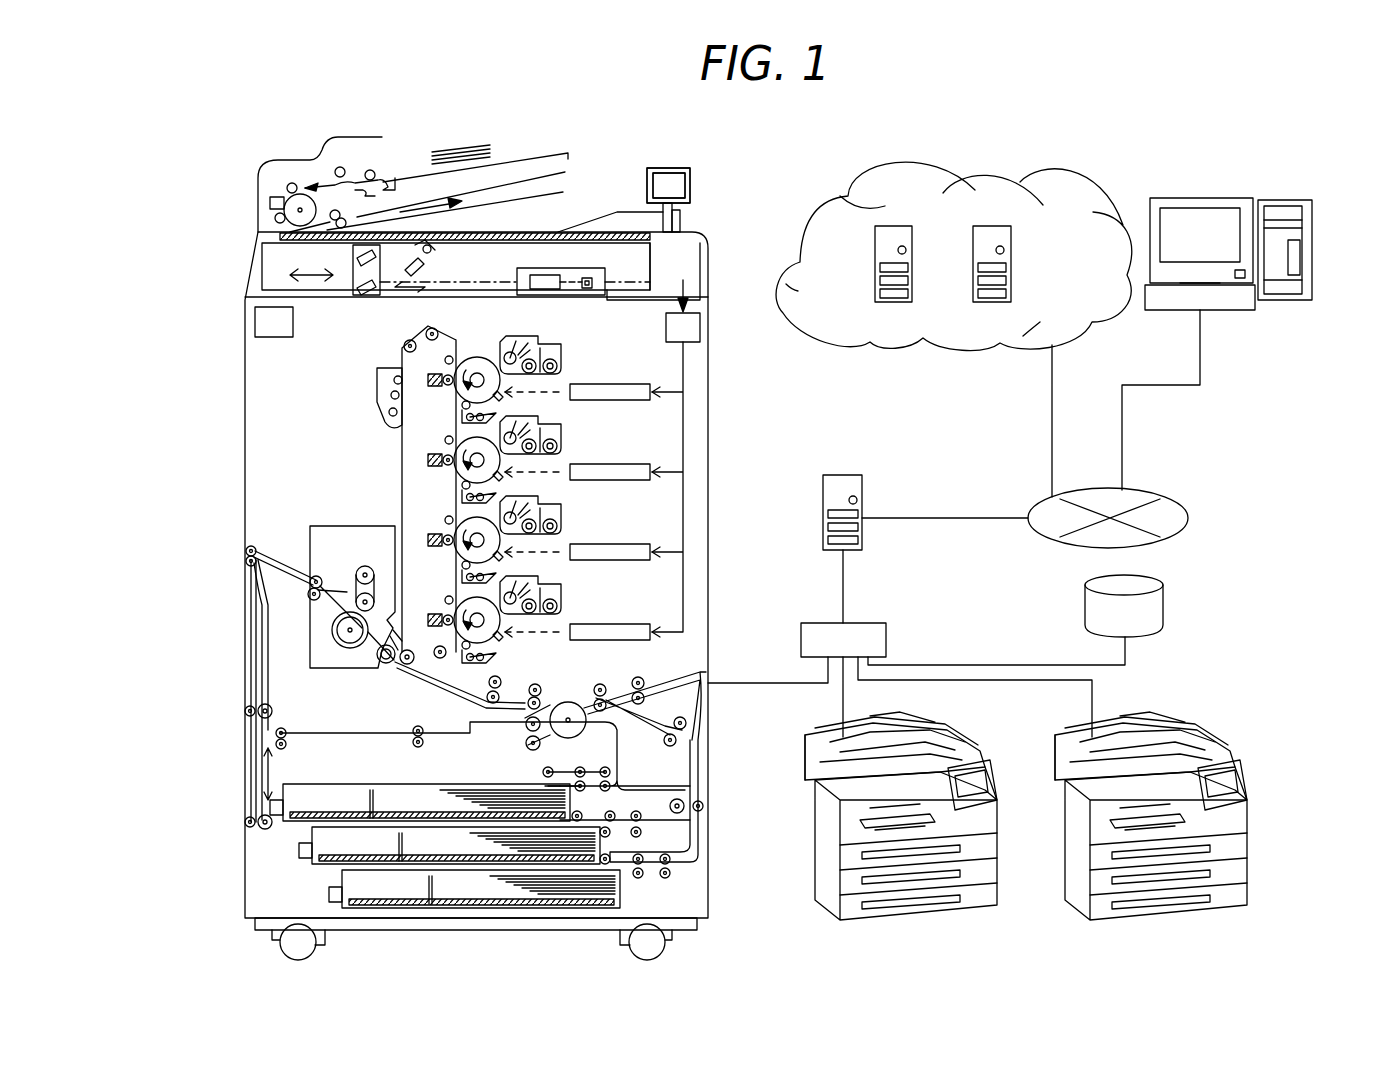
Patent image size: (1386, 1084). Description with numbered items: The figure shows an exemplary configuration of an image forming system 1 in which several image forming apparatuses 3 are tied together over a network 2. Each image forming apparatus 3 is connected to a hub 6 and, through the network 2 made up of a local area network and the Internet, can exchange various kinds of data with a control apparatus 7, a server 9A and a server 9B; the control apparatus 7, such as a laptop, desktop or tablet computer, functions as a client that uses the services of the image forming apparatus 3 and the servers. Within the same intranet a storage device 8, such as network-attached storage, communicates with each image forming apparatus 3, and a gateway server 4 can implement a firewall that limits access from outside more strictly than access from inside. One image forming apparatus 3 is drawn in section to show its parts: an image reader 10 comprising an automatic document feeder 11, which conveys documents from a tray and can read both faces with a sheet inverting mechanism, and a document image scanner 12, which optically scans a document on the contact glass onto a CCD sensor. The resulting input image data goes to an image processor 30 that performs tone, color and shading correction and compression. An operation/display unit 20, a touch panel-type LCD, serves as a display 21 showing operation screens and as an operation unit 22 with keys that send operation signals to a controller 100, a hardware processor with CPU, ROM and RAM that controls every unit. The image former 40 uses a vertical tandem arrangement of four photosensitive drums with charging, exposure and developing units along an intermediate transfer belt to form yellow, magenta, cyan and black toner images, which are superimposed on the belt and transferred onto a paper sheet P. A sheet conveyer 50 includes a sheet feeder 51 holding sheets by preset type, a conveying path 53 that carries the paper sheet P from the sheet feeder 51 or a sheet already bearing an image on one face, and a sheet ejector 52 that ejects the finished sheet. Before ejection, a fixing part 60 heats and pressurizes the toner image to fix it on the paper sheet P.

The image forming system 1 is at (1275, 140).
The network 2 is at (1170, 498).
The image forming apparatus 3 is at (548, 124).
The gateway server 4 is at (843, 475).
The hub 6 is at (886, 640).
The control apparatus 7 is at (1262, 310).
The storage device 8 is at (1165, 606).
The server 9A is at (875, 282).
The server 9B is at (1011, 272).
The image reader 10 is at (188, 185).
The automatic document feeder 11 is at (262, 205).
The document image scanner 12 is at (258, 244).
The operation/display unit 20 is at (665, 170).
The display 21 is at (669, 185).
The operation unit 22 is at (668, 185).
The image processor 30 is at (672, 326).
The image former 40 is at (352, 406).
The sheet conveyer 50 is at (258, 852).
The sheet feeder 51 is at (410, 770).
The sheet ejector 52 is at (270, 540).
The conveying path 53 is at (412, 690).
The fixing part 60 is at (350, 526).
The controller 100 is at (262, 322).
The paper sheet P is at (575, 800).